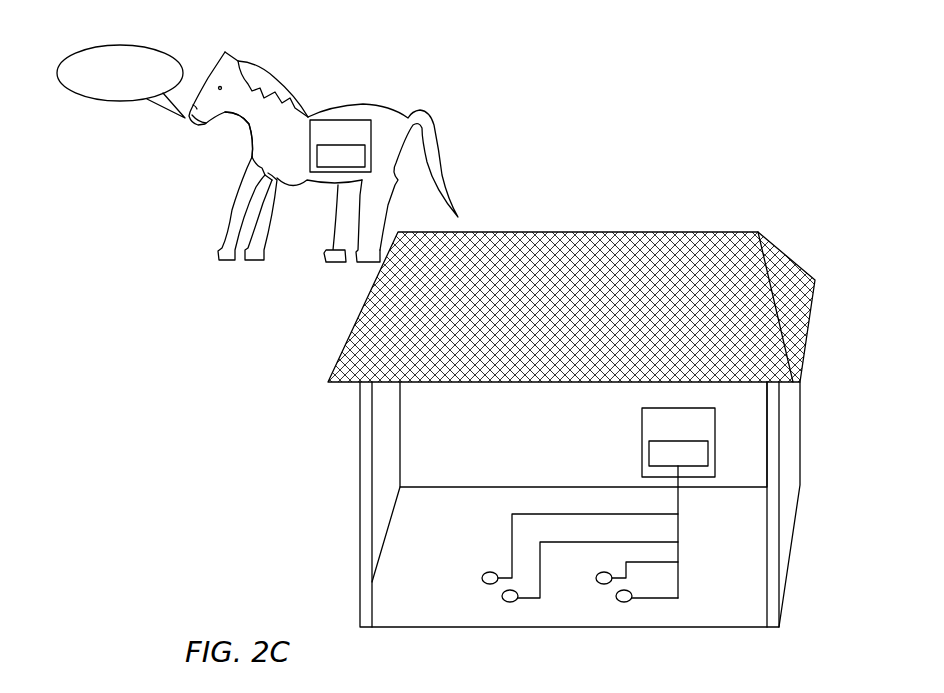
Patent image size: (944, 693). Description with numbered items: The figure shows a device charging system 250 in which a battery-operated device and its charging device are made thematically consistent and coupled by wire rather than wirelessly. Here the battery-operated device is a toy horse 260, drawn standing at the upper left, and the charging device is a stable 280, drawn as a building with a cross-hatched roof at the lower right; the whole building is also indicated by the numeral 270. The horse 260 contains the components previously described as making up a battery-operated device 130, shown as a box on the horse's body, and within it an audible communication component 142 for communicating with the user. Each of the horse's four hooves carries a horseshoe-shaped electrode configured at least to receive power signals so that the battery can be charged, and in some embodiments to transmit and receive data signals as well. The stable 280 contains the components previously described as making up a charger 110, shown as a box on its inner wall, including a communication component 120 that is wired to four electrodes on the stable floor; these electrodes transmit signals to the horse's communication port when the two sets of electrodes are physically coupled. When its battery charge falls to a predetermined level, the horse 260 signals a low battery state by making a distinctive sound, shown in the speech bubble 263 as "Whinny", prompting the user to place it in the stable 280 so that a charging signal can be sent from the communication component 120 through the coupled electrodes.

The device charging system 250 is at (320, 92).
The toy horse 260 is at (248, 147).
The speech bubble 263 is at (127, 108).
The battery-operated device 130 is at (340, 146).
The audible communication component 142 is at (341, 156).
The barn / stable 270 is at (641, 210).
The stable 280 is at (328, 382).
The charger 110 is at (678, 442).
The communication component 120 is at (678, 453).